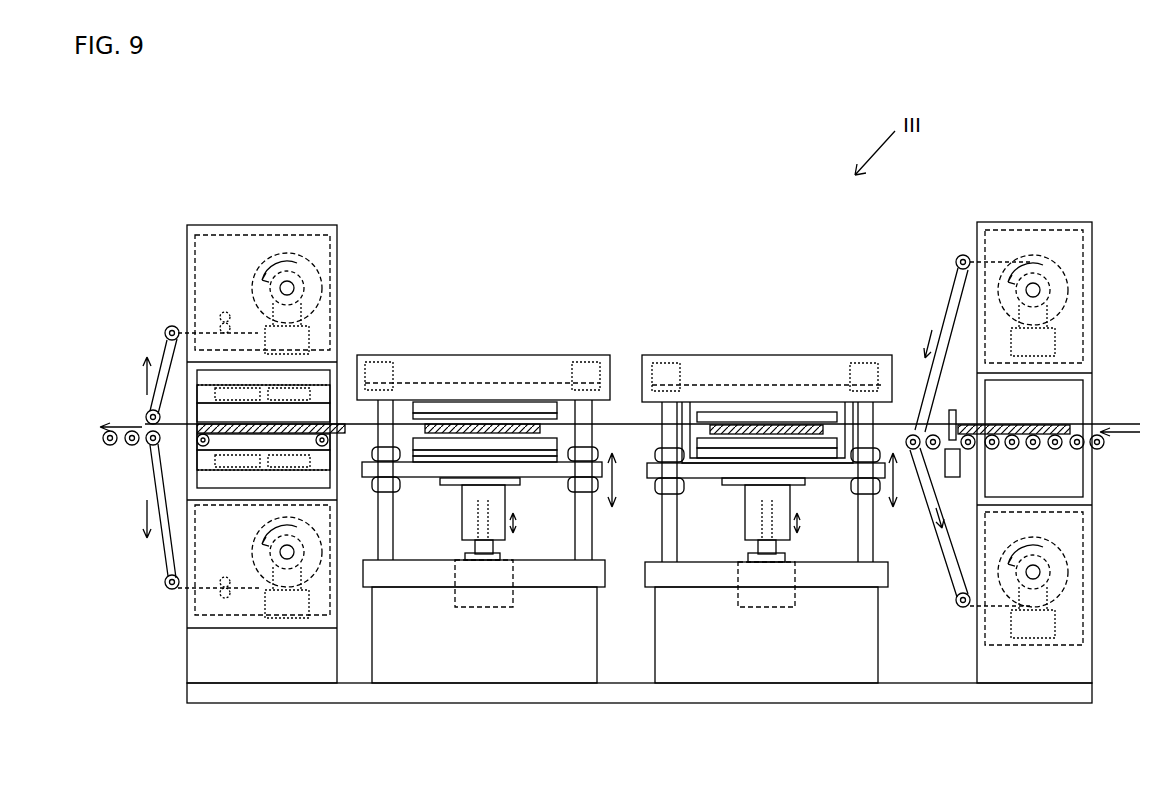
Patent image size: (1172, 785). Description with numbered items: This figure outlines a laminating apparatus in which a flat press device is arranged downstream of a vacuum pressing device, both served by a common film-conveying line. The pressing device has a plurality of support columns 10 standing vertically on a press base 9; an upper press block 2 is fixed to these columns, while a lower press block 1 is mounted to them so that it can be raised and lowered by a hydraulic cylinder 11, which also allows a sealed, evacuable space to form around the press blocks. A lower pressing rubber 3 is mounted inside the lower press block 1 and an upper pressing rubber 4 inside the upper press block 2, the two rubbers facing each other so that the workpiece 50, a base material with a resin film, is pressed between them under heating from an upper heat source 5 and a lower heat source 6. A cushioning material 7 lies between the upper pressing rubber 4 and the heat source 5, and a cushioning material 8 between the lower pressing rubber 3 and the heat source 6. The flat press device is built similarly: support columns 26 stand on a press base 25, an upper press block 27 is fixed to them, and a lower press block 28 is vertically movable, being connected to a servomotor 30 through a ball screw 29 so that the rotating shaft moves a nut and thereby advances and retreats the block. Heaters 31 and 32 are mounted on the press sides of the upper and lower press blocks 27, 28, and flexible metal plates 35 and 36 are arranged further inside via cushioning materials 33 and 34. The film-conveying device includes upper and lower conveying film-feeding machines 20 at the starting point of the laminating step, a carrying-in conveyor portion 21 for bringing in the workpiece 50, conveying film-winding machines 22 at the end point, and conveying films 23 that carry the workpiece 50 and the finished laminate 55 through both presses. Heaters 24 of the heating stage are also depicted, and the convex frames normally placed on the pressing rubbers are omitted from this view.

The lower press block 1 is at (697, 480).
The upper press block 2 is at (700, 375).
The lower pressing rubber 3 is at (800, 465).
The upper pressing rubber 4 is at (822, 436).
The upper heat source 5 is at (740, 412).
The lower heat source 6 is at (790, 470).
The cushioning material 7 is at (783, 422).
The cushioning material 8 is at (732, 455).
The press base 9 is at (705, 620).
The support columns 10 is at (663, 375).
The hydraulic cylinder 11 is at (767, 607).
The conveying film-feeding machines 20 is at (1042, 290).
The carrying-in conveyor portion 21 is at (1040, 445).
The conveying film-winding machines 22 is at (285, 290).
The conveying films 23 is at (162, 334).
The heater 24 is at (198, 386).
The press base 25 is at (430, 620).
The support columns 26 is at (380, 372).
The upper press block 27 is at (413, 362).
The lower press block 28 is at (412, 575).
The ball screw 29 is at (463, 556).
The servomotor 30 is at (485, 607).
The heater 31 is at (515, 545).
The heater 32 is at (456, 408).
The cushioning material 33 is at (525, 478).
The cushioning material 34 is at (500, 440).
The flexible metal plate 35 is at (548, 480).
The flexible metal plate 36 is at (540, 418).
The workpiece 50 is at (1045, 432).
The laminate 55 is at (260, 430).